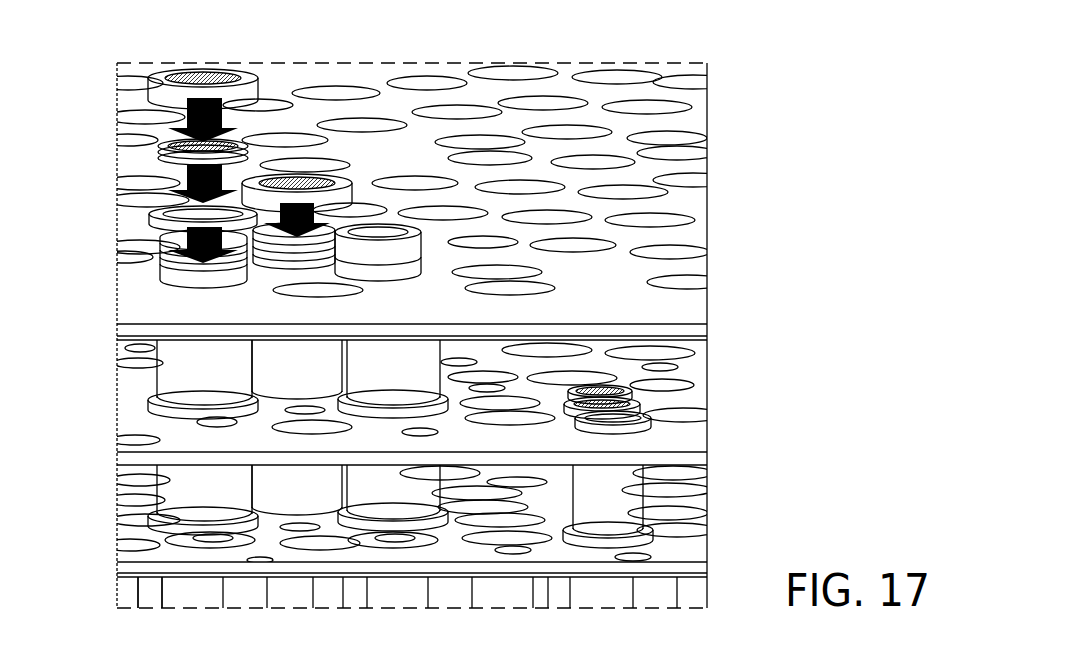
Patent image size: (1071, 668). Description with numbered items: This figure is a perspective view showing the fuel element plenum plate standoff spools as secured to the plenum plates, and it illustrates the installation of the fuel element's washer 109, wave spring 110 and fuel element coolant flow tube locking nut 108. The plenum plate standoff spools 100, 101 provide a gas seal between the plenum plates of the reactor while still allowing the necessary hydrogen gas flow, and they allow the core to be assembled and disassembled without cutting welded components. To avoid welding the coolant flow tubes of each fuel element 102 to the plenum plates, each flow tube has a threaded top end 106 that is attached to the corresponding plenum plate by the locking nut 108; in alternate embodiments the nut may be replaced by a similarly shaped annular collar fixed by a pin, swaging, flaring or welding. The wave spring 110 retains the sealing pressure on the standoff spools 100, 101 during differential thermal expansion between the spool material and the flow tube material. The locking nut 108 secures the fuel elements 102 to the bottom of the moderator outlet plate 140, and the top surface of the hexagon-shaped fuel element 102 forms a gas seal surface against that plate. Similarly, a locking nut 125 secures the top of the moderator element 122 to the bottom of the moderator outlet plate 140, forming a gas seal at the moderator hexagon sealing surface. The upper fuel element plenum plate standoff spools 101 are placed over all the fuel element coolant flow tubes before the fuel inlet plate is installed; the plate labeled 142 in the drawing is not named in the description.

The fuel element plenum plate standoff spool 100 is at (172, 478).
The upper fuel element plenum plate standoff spool 101 is at (187, 392).
The fuel element 102 is at (150, 595).
The threaded top end 106 is at (185, 353).
The locking nut 108 is at (148, 78).
The washer 109 is at (163, 223).
The wave spring 110 is at (145, 156).
The moderator element 122 is at (668, 594).
The locking nut 125 is at (647, 411).
The moderator outlet plate 140 is at (692, 547).
The middle tray plate 142 is at (692, 440).